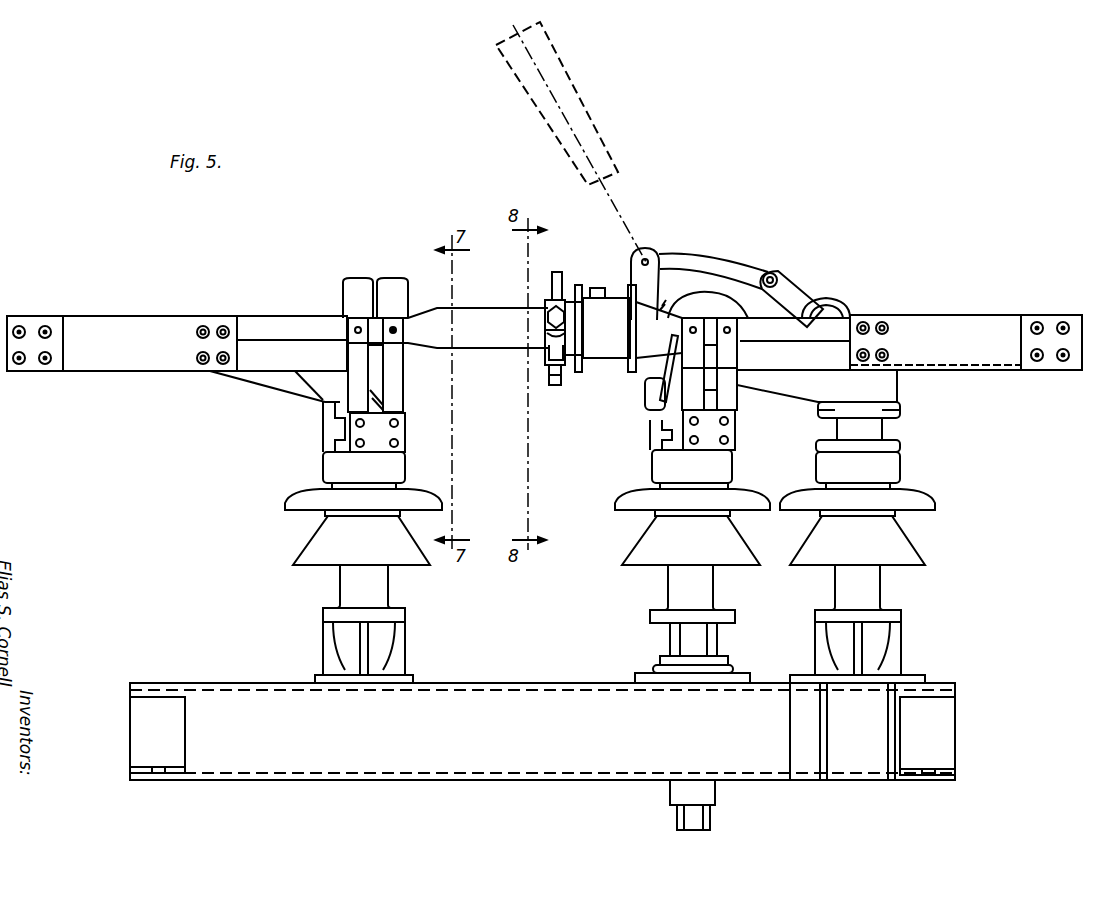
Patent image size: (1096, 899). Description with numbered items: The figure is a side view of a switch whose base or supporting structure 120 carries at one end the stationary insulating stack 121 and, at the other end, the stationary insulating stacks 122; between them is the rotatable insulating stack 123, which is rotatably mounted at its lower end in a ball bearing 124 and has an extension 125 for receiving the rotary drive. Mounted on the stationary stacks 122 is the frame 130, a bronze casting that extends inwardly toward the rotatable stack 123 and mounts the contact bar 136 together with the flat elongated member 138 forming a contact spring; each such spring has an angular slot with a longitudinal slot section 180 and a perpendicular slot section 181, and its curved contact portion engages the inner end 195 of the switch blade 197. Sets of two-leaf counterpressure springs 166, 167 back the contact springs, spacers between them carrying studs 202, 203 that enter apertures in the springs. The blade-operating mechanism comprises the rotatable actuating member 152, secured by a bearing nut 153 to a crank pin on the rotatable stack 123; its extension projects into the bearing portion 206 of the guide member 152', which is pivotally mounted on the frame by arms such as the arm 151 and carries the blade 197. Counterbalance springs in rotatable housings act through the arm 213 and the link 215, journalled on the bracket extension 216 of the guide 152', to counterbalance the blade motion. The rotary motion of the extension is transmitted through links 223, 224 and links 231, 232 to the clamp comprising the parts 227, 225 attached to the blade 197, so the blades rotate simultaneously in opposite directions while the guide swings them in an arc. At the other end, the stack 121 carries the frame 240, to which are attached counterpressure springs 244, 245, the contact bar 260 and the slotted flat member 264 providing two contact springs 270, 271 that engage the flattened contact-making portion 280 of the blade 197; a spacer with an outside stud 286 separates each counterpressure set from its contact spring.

The base or supporting structure 120 is at (478, 695).
The stationary insulating stack 121 is at (285, 500).
The stationary insulating stack 122 is at (940, 500).
The rotatable insulating stack 123 is at (620, 495).
The ball bearing 124 is at (660, 660).
The extension 125 is at (712, 793).
The frame 130 is at (890, 385).
The contact bar 136 is at (985, 318).
The flat elongated member 138 is at (790, 350).
The arm of the guide member 151 is at (652, 395).
The rotatable actuating member 152 is at (702, 306).
The guide member 152' is at (629, 276).
The bearing nut 153 is at (668, 300).
The counterpressure springs 166 is at (683, 428).
The counterpressure springs 167 is at (727, 395).
The longitudinal slot section 180 is at (820, 345).
The perpendicular slot section 181 is at (728, 328).
The inner end of switch blade 195 is at (662, 345).
The switch blade 197 is at (578, 110).
The stud of spacer 202 is at (706, 318).
The stud of spacer 203 is at (772, 275).
The bearing portion of the guide 206 is at (601, 300).
The arm 213 is at (805, 298).
The link 215 is at (735, 262).
The bracket extension 216 is at (647, 258).
The link 223 is at (546, 388).
The link 224 is at (552, 295).
The clamp part 225 is at (548, 355).
The clamp part 227 is at (546, 318).
The link 231 is at (540, 395).
The link 232 is at (556, 285).
The frame 240 is at (278, 395).
The counterpressure springs 244 is at (405, 395).
The counterpressure springs 245 is at (352, 380).
The contact bar 260 is at (118, 336).
The flat member 264 is at (265, 352).
The contact spring 270 is at (356, 285).
The contact spring 271 is at (388, 290).
The flattened contact-making portion 280 is at (412, 320).
The stud of spacer 286 is at (397, 340).